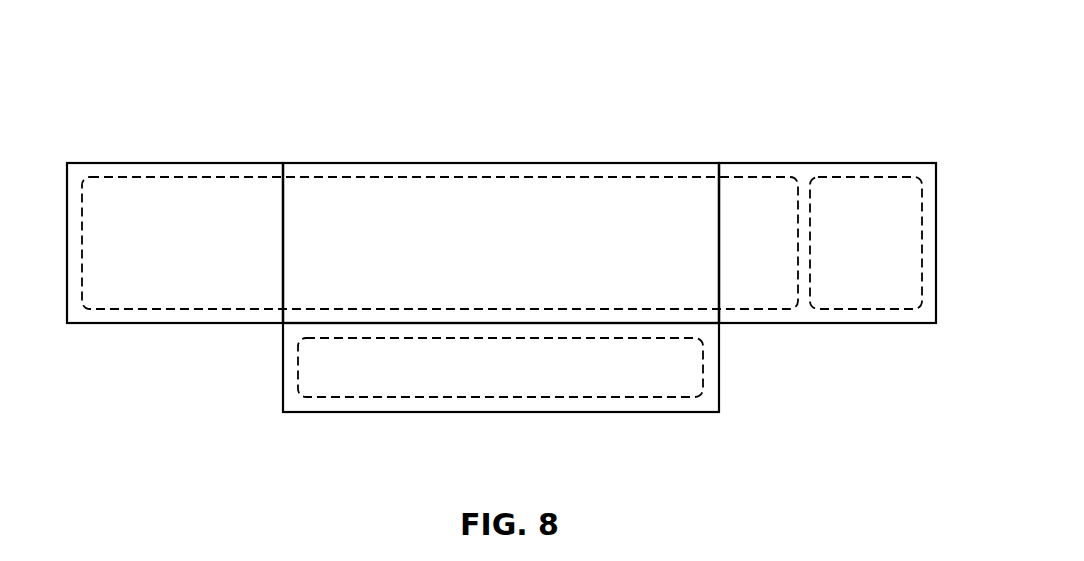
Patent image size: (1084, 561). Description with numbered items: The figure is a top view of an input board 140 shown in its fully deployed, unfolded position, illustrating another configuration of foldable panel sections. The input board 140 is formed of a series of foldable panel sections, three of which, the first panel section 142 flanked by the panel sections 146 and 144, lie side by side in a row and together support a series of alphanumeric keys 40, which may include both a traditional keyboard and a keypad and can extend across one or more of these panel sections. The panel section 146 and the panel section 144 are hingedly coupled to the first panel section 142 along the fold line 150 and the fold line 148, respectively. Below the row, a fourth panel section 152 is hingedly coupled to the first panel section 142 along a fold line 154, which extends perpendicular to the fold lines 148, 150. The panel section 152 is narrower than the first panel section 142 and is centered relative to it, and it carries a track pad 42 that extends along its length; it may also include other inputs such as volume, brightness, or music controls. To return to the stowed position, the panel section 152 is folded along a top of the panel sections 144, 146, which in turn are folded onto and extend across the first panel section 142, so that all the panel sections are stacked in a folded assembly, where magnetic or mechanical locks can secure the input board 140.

The input board 140 is at (857, 59).
The panel section 146 is at (134, 162).
The first panel section 142 is at (500, 162).
The panel section 144 is at (868, 162).
The alphanumeric keys 40 is at (157, 298).
The fold line 150 is at (282, 296).
The fold line 148 is at (719, 295).
The fold line 154 is at (652, 325).
The fourth panel section 152 is at (353, 416).
The track pad 42 is at (500, 380).